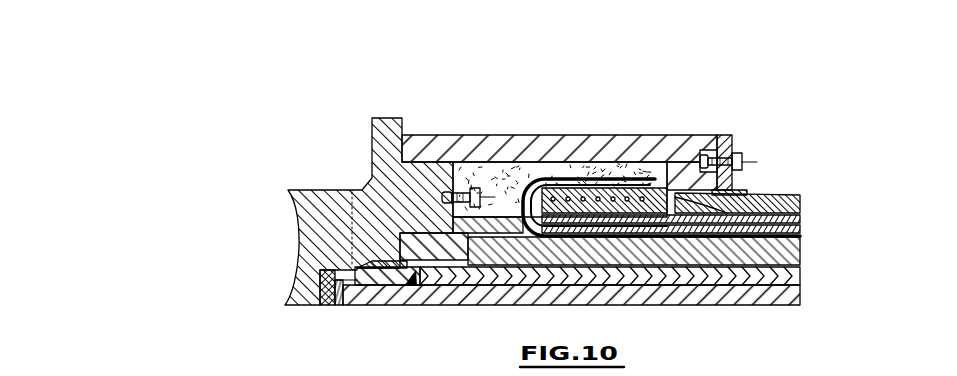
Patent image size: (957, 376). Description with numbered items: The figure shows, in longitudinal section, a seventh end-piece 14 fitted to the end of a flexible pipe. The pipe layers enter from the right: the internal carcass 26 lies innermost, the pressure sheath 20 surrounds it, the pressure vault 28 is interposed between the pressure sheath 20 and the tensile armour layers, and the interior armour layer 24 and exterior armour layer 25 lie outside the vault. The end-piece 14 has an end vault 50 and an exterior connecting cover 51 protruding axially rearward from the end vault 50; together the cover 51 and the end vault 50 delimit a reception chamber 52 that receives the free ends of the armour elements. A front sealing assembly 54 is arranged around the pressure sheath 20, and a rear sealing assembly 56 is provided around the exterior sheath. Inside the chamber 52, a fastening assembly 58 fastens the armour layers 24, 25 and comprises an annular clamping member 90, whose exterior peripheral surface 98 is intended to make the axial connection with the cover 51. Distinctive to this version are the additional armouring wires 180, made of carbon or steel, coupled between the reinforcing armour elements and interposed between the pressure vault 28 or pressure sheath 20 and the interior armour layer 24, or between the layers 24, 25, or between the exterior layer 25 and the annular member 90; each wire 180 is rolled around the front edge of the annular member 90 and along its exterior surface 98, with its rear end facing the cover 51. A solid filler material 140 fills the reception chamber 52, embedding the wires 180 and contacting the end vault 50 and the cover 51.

The end-piece 14 is at (820, 122).
The end vault 50 is at (302, 218).
The exterior connecting cover 51 is at (587, 137).
The reception chamber 52 is at (500, 175).
The exterior peripheral surface 98 is at (560, 178).
The annular clamping member 90 is at (618, 180).
The fastening assembly 58 is at (652, 150).
The rear sealing assembly 56 is at (747, 143).
The solid filler material 140 is at (465, 185).
The front sealing assembly 54 is at (407, 287).
The additional armouring wires 180 is at (657, 227).
The exterior armour layer 25 is at (800, 212).
The interior armour layer 24 is at (800, 228).
The pressure vault 28 is at (800, 252).
The pressure sheath 20 is at (800, 277).
The internal carcass 26 is at (800, 305).